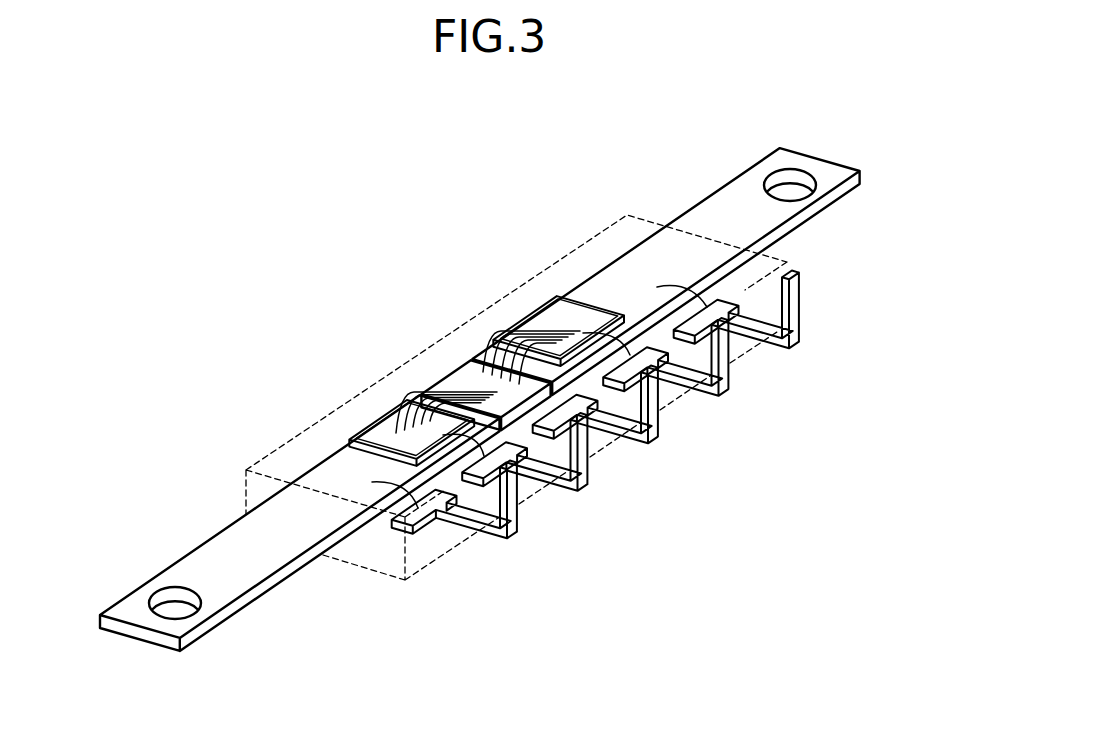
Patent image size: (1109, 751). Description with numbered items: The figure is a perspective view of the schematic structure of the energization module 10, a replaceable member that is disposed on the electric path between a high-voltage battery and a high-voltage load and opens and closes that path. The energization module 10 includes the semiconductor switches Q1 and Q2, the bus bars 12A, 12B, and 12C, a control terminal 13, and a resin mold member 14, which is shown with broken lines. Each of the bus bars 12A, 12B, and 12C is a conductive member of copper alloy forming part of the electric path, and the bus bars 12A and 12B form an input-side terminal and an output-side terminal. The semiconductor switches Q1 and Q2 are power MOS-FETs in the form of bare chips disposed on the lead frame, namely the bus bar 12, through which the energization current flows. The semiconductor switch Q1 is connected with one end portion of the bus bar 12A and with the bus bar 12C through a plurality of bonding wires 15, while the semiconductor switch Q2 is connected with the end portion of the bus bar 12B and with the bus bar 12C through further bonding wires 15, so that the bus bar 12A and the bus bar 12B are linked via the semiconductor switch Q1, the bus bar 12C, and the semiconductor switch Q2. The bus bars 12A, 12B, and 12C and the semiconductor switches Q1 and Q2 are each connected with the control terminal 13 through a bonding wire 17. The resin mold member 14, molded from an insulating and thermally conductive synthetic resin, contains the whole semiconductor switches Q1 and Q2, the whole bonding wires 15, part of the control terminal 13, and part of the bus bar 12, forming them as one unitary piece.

The energization module 10 is at (393, 217).
The bus bar 12 is at (506, 399).
The bus bar 12A is at (288, 578).
The bus bar 12B is at (820, 213).
The bus bar 12C is at (463, 360).
The control terminal 13 is at (798, 355).
The resin mold member 14 is at (247, 468).
The bonding wires 15 is at (483, 366).
The bonding wire 17 is at (678, 295).
The semiconductor switch Q1 is at (385, 438).
The semiconductor switch Q2 is at (583, 327).